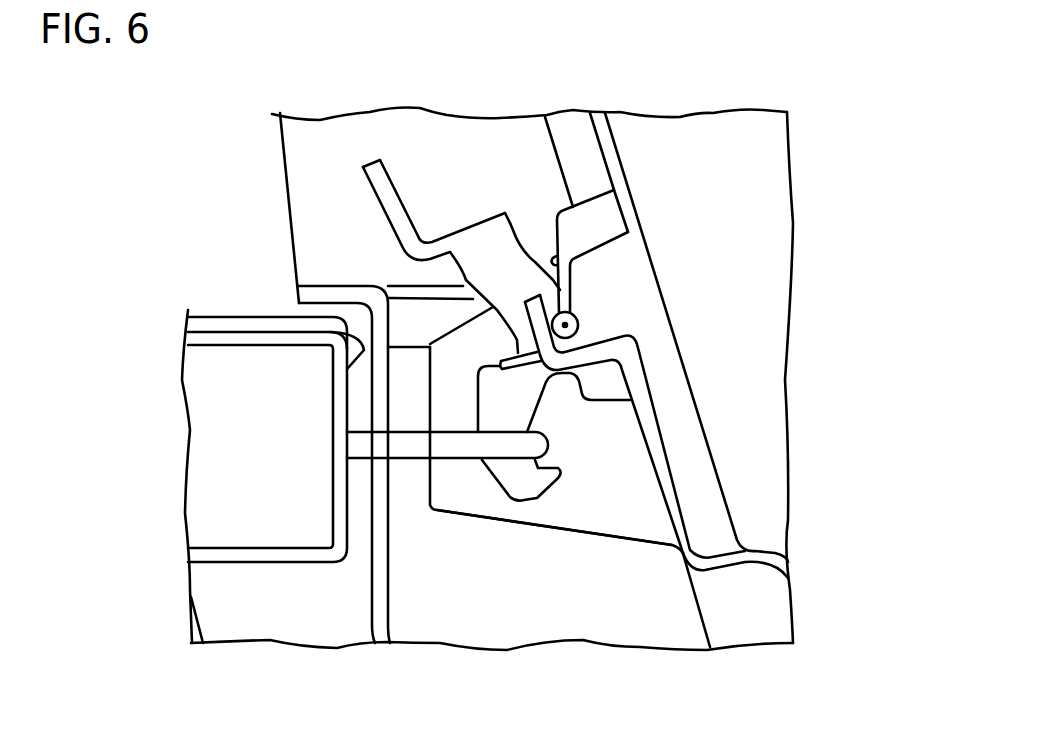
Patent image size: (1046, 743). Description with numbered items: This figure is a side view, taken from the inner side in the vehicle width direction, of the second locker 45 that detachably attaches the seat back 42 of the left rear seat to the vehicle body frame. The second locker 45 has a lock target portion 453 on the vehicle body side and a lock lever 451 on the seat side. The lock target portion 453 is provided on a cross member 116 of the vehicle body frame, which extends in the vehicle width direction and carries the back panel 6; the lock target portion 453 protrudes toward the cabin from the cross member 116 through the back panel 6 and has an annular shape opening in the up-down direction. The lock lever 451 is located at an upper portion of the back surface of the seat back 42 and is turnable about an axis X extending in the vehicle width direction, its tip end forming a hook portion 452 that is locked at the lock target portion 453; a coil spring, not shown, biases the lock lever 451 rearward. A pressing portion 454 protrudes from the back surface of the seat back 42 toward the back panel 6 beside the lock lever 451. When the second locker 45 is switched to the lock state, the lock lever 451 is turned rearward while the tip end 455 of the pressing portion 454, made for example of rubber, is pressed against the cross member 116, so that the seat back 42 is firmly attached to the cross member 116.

The second locker 45 is at (445, 174).
The seat back 42 is at (704, 160).
The lock lever 451 is at (378, 197).
The cross member 116 is at (228, 332).
The back panel 6 is at (392, 580).
The tip end 455 is at (410, 483).
The lock target portion 453 is at (449, 461).
The hook portion 452 is at (528, 490).
The pressing portion 454 is at (633, 535).
The axis X is at (566, 325).